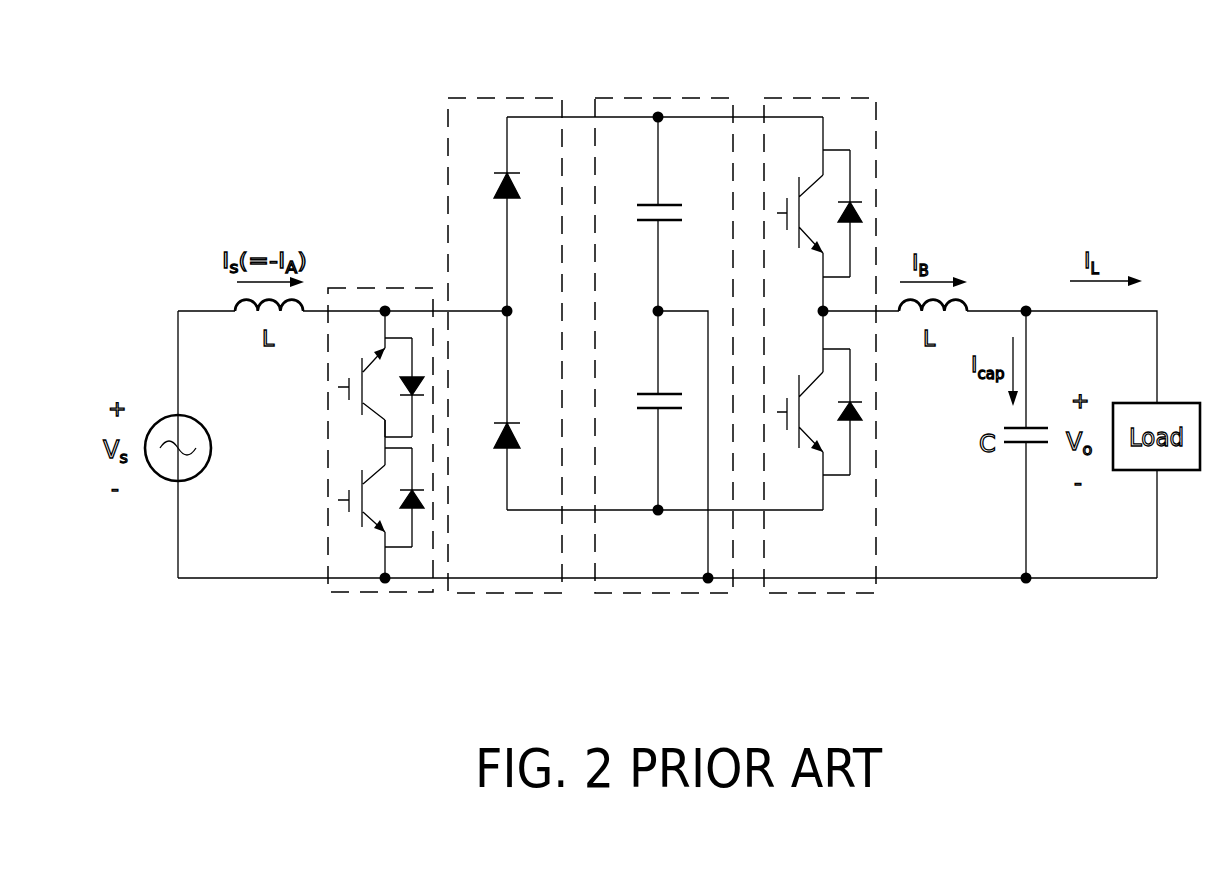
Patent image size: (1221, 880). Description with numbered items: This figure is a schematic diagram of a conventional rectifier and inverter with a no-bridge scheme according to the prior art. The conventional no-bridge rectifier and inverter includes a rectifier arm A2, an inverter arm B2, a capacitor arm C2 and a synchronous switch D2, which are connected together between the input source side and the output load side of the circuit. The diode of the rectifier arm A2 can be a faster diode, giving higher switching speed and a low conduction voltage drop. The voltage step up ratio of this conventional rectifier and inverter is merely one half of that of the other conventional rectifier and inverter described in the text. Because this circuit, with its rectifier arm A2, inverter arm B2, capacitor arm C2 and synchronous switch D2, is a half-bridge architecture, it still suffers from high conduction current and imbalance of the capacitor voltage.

The rectifier arm A2 is at (483, 98).
The inverter arm B2 is at (798, 98).
The capacitor arm C2 is at (643, 98).
The synchronous switch D2 is at (382, 288).